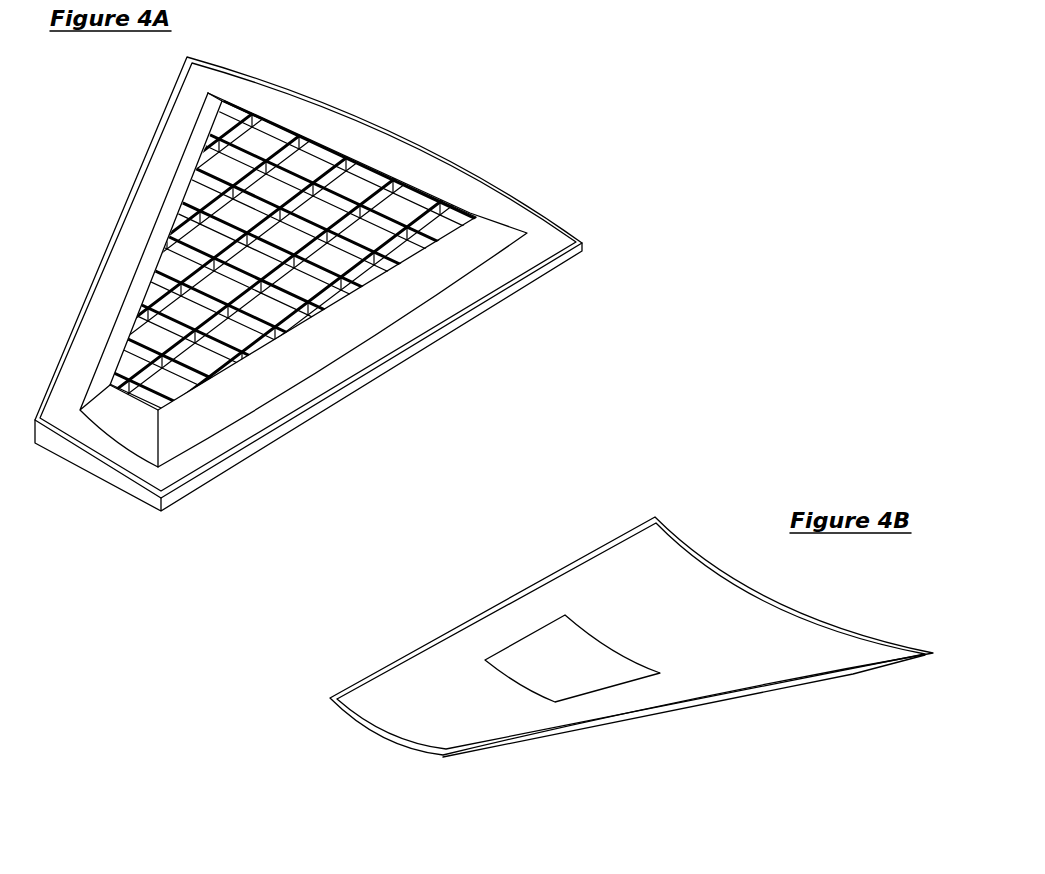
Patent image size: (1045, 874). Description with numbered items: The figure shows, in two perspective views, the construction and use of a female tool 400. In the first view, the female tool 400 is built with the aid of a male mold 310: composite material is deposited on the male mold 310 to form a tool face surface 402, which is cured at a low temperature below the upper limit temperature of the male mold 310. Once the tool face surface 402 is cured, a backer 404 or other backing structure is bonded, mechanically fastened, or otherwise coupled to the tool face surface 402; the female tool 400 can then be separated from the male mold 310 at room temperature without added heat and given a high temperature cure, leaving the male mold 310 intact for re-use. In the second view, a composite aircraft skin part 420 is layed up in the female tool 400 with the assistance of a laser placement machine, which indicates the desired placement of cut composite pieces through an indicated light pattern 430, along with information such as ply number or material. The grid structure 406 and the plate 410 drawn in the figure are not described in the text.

In FIG. 4A, the male mold 310 is at (88, 483).
In FIG. 4A, the female tool 400 is at (299, 284).
In FIG. 4A, the tool face surface 402 is at (401, 128).
In FIG. 4A, the backer 404 is at (192, 450).
In FIG. 4B, the backer 404 is at (679, 718).
In FIG. 4A, the grid structure 406 is at (430, 183).
In FIG. 4B, the cover plate 410 is at (433, 636).
In FIG. 4B, the composite aircraft skin part 420 is at (392, 657).
In FIG. 4B, the indicated light pattern 430 is at (520, 637).